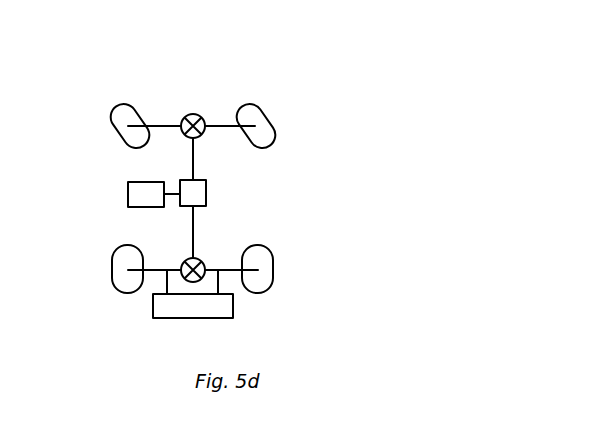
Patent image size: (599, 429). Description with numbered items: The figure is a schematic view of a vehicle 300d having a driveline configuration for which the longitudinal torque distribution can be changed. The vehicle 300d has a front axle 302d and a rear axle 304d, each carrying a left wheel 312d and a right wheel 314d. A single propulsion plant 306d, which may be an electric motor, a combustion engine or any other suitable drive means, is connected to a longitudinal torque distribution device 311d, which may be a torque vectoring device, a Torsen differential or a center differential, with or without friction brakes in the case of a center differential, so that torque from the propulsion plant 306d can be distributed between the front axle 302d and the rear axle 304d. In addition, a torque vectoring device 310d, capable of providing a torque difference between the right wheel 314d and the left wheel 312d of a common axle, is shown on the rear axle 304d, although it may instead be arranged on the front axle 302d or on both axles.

The vehicle 300d is at (165, 92).
The front axle 302d is at (223, 126).
The rear axle 304d is at (213, 267).
The propulsion plant 306d is at (128, 191).
The torque vectoring device 310d is at (177, 318).
The longitudinal torque distribution device 311d is at (206, 193).
The left wheel 312d is at (108, 137).
The right wheel 314d is at (278, 128).